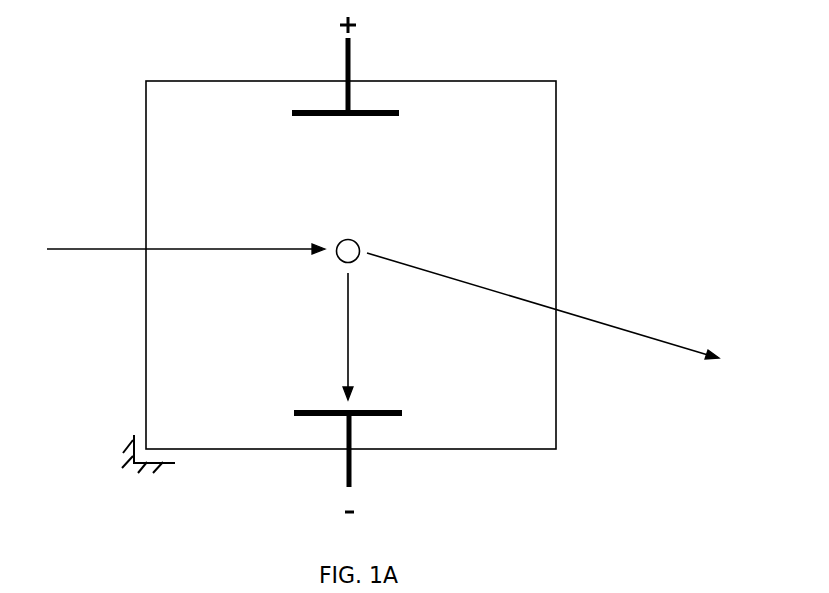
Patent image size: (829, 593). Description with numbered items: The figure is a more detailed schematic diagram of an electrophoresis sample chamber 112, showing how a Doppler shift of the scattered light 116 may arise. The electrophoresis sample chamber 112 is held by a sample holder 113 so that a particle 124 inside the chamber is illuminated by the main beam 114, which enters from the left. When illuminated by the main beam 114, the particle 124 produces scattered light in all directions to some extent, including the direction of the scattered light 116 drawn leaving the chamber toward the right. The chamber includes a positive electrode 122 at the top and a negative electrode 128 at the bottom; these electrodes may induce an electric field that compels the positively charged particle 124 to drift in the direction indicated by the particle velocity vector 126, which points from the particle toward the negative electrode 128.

The electrophoresis sample chamber 112 is at (518, 453).
The sample holder 113 is at (133, 477).
The main beam 114 is at (93, 240).
The scattered light 116 is at (672, 362).
The positive electrode 122 is at (364, 49).
The particle 124 is at (348, 225).
The particle velocity vector 126 is at (335, 308).
The negative electrode 128 is at (358, 478).